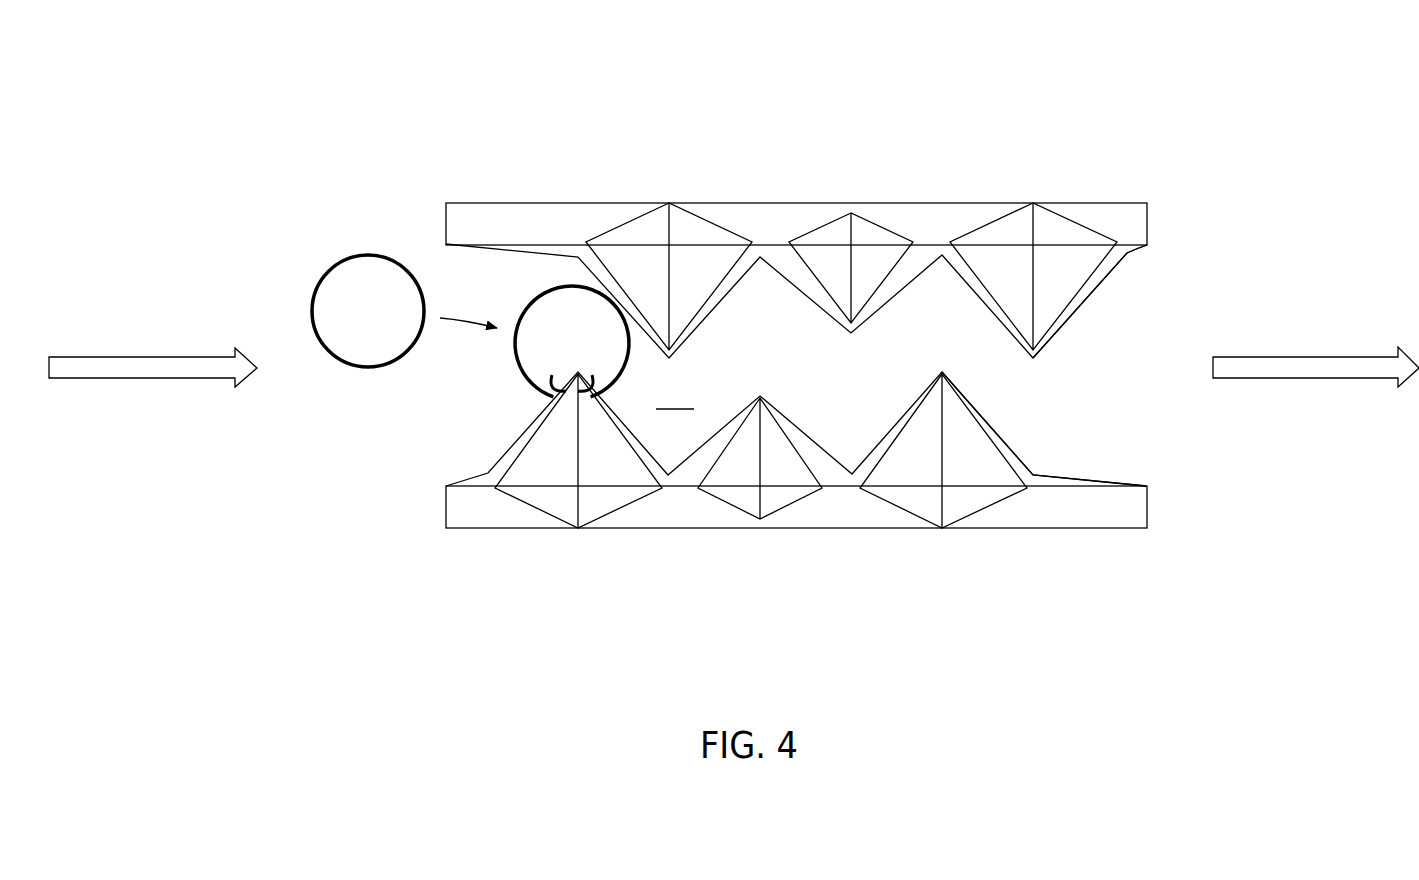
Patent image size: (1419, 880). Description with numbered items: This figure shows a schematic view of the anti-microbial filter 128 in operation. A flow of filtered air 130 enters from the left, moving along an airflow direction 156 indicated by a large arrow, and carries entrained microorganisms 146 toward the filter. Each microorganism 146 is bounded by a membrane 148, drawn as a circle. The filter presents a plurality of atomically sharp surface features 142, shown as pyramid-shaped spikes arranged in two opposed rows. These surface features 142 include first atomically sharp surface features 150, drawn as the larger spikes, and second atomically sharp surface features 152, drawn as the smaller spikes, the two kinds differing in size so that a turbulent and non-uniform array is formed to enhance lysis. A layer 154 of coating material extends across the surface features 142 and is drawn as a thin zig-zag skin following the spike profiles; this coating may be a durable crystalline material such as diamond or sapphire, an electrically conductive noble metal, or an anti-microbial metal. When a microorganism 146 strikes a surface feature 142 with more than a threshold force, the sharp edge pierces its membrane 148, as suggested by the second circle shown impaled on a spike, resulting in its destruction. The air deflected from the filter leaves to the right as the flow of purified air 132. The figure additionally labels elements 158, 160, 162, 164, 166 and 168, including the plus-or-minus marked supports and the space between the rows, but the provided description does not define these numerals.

The anti-microbial filter 128 is at (1022, 110).
The flow of filtered air 130 is at (153, 350).
The airflow direction 156 is at (97, 357).
The flow of purified air 132 is at (1267, 357).
The atomically sharp surface features 142 is at (1027, 197).
The microorganisms 146 is at (298, 372).
The membrane 148 is at (368, 367).
The first atomically sharp surface features 150 is at (647, 220).
The second atomically sharp surface features 152 is at (869, 226).
The layer of coating material 154 is at (1070, 315).
The upper die plate 158 is at (1140, 187).
The upper conformable layer 160 is at (1140, 258).
The lower die plate 162 is at (1140, 542).
The lower conformable layer 164 is at (1140, 470).
The pierced preform 166 is at (432, 265).
The gap between dies 168 is at (675, 396).